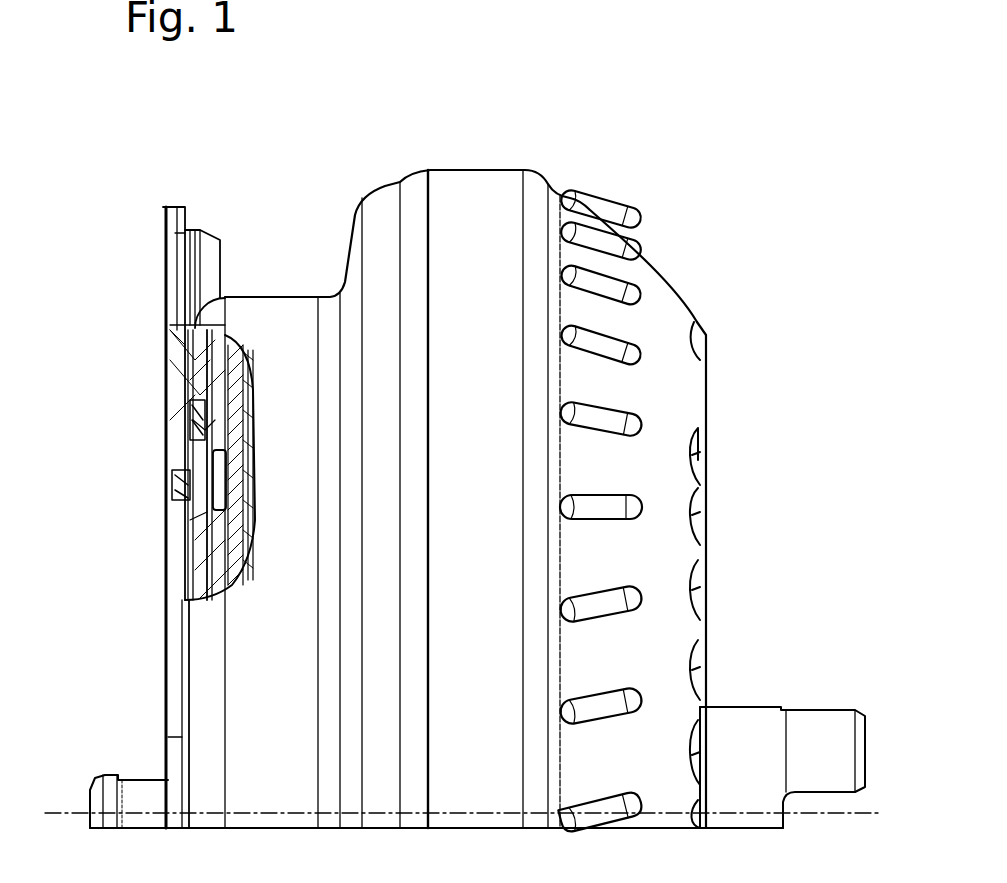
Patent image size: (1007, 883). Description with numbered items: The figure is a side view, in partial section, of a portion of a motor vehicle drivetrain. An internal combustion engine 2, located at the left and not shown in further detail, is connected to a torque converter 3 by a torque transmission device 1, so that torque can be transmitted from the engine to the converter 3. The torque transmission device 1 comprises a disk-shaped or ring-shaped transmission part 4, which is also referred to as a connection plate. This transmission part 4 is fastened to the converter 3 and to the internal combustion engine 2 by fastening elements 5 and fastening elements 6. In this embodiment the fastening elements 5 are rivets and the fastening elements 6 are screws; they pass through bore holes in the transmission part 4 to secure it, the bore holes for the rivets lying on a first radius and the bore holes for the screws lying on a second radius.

The torque transmission device 1 is at (194, 203).
The internal combustion engine 2 is at (58, 432).
The torque converter 3 is at (485, 205).
The transmission part 4 is at (200, 410).
The fastening elements 5 is at (173, 483).
The fastening elements 6 is at (207, 258).